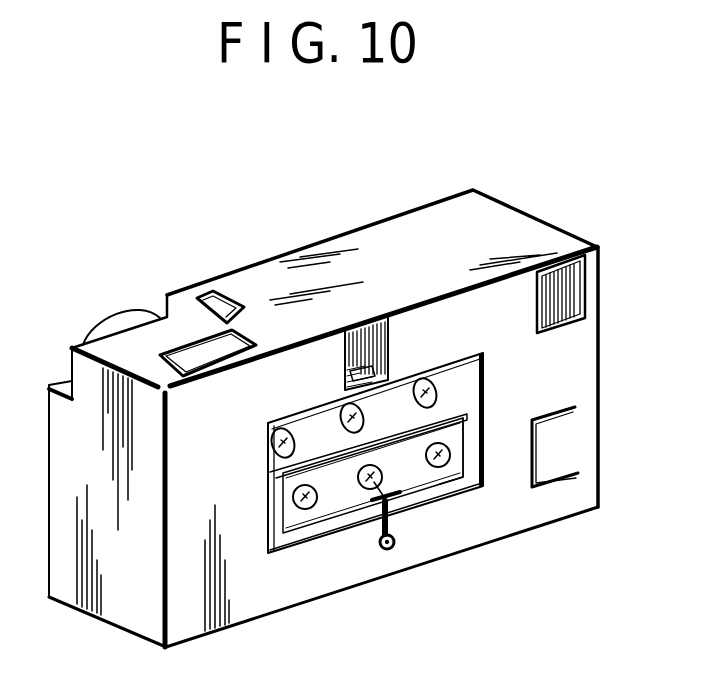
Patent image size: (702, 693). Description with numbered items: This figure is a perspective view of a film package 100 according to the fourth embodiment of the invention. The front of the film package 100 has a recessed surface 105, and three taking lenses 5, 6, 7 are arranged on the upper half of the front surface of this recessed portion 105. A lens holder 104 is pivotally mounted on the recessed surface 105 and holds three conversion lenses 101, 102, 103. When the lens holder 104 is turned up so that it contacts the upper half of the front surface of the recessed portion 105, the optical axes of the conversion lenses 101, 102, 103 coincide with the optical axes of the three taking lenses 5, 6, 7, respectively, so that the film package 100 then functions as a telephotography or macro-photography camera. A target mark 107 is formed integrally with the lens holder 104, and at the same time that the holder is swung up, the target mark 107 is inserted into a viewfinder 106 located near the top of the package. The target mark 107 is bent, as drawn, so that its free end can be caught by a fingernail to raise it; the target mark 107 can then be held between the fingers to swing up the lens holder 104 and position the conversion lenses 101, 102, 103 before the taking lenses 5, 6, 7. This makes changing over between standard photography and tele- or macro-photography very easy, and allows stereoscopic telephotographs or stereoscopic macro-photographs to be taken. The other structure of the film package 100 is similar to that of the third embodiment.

The film package 100 is at (342, 235).
The taking lens 5 is at (280, 428).
The taking lens 6 is at (343, 407).
The taking lens 7 is at (423, 377).
The conversion lens 101 is at (303, 510).
The conversion lens 102 is at (405, 502).
The conversion lens 103 is at (455, 487).
The lens holder 104 is at (333, 489).
The recessed surface 105 is at (455, 378).
The viewfinder 106 is at (388, 318).
The target mark 107 is at (396, 548).